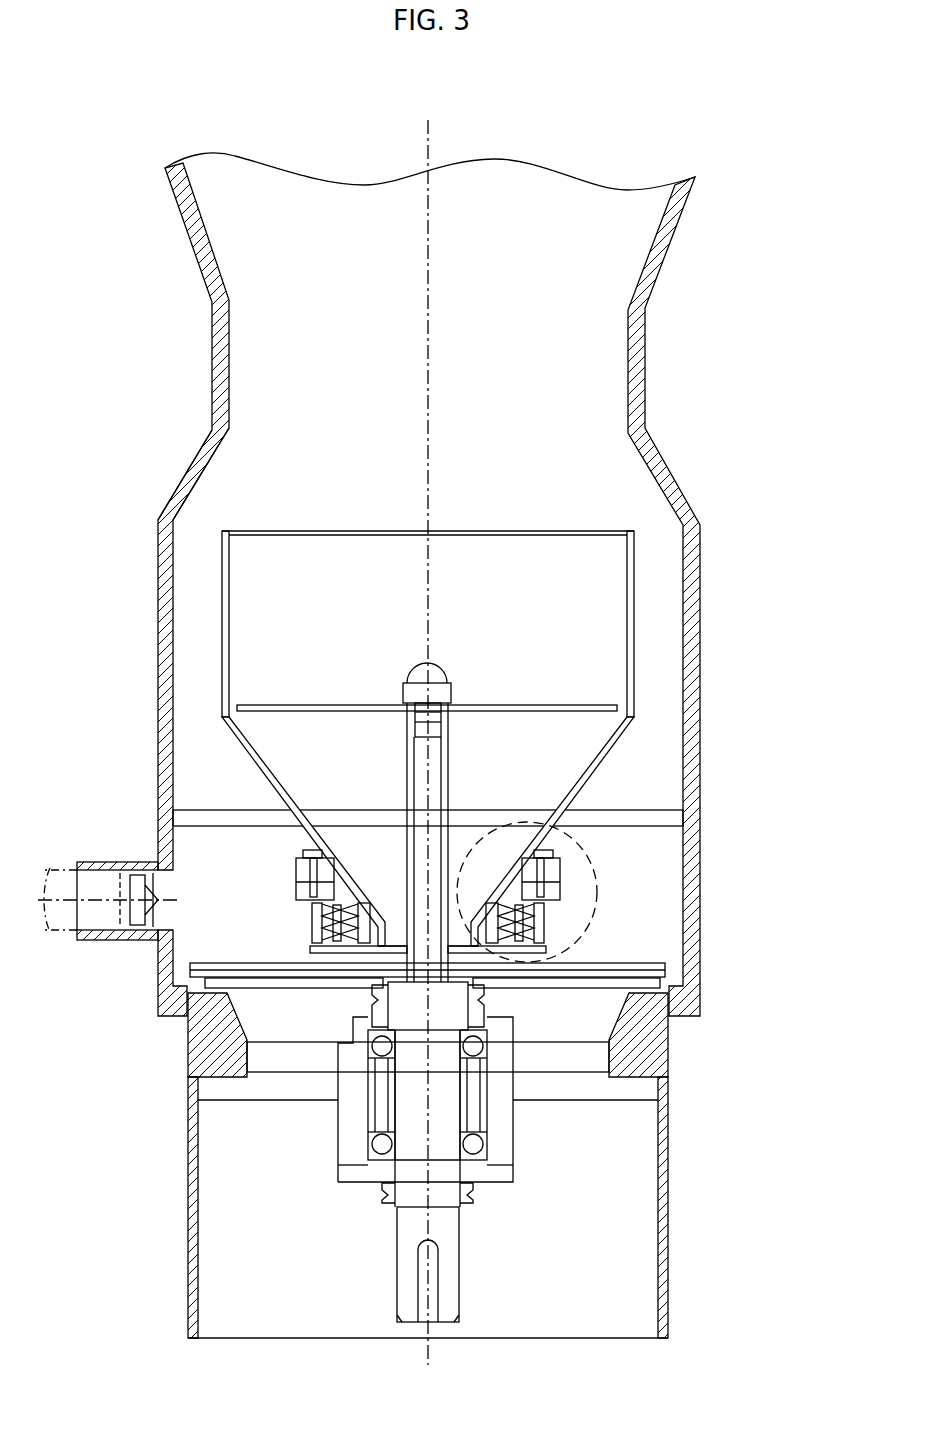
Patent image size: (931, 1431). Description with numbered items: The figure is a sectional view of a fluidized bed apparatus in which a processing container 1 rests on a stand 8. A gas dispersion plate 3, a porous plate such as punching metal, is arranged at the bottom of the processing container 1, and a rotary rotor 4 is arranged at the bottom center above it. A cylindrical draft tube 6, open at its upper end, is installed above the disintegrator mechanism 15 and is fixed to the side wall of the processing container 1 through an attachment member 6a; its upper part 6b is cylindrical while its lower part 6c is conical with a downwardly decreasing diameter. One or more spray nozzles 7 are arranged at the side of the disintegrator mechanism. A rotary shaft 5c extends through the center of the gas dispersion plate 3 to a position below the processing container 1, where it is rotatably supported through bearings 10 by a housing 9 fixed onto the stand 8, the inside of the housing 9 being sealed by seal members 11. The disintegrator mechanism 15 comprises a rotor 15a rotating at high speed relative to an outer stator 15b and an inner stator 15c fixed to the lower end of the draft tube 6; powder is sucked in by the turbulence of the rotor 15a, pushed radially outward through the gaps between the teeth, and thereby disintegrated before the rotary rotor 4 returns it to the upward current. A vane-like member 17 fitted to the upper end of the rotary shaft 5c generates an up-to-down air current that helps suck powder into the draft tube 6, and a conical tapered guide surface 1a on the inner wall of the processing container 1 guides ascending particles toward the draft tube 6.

The processing container 1 is at (414, 584).
The conical tapered guide surface 1a is at (216, 462).
The gas dispersion plate 3 is at (320, 988).
The rotary rotor 4 is at (215, 961).
The rotary shaft 5c is at (407, 1235).
The draft tube 6 is at (481, 738).
The attachment member 6a is at (638, 818).
The upper part of draft tube 6b is at (634, 637).
The lower part of draft tube 6c is at (622, 740).
The spray nozzle 7 is at (90, 918).
The stand 8 is at (188, 1213).
The housing 9 is at (347, 1120).
The bearings 10 is at (495, 1050).
The seal members 11 is at (482, 1005).
The disintegrator mechanism 15 is at (432, 892).
The rotor 15a is at (312, 951).
The outer stator 15b is at (313, 918).
The inner stator 15c is at (368, 922).
The vane-like member 17 is at (538, 703).